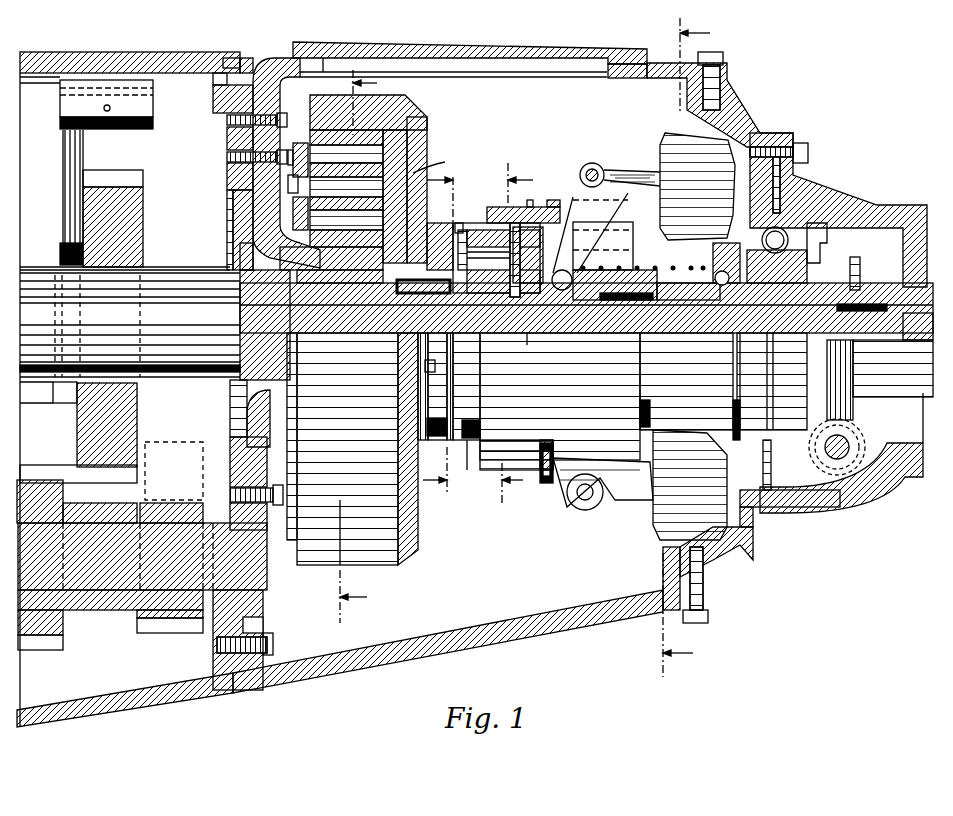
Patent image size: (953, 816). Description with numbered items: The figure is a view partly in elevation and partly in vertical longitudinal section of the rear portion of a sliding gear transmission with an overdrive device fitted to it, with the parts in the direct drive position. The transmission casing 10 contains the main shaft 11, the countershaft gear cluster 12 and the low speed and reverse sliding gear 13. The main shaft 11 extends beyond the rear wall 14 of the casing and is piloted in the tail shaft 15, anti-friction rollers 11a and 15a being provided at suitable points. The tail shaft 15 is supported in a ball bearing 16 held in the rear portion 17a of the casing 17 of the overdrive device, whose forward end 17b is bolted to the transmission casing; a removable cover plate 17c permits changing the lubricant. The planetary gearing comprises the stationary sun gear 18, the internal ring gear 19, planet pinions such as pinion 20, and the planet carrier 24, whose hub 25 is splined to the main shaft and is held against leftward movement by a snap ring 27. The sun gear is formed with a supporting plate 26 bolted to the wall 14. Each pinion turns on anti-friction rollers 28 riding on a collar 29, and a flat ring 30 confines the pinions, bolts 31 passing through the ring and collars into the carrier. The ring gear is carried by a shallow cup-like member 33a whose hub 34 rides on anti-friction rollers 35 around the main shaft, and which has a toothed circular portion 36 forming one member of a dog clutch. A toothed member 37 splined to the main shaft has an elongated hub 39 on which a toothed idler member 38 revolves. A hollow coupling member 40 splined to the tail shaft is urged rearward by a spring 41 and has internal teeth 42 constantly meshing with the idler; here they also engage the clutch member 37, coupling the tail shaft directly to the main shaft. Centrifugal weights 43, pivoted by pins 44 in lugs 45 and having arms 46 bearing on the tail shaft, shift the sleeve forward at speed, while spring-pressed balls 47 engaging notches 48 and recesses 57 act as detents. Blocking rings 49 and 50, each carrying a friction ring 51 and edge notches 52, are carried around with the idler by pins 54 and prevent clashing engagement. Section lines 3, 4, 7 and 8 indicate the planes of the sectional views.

The casing 10 is at (95, 712).
The main shaft 11 is at (153, 293).
The anti-friction rollers 11a is at (625, 303).
The countershaft gear cluster 12 is at (111, 607).
The low speed and reverse sliding gear 13 is at (133, 412).
The rear wall 14 is at (227, 142).
The tail shaft 15 is at (887, 380).
The anti-friction rollers 15a is at (875, 303).
The ball bearing 16 is at (807, 253).
The casing of the overdrive device 17 is at (547, 620).
The rear portion 17a is at (813, 193).
The forward end 17b is at (273, 60).
The removable cover plate 17c is at (547, 64).
The sun gear 18 is at (360, 290).
The internal ring gear 19 is at (387, 112).
The planet pinion 20 is at (387, 133).
The planet carrier 24 is at (395, 290).
The hub 25 is at (330, 288).
The supporting plate 26 is at (257, 445).
The snap ring 27 is at (253, 260).
The anti-friction rollers 28 is at (417, 227).
The collar 29 is at (421, 190).
The flat ring 30 is at (297, 143).
The bolts 31 is at (294, 190).
The member 33a is at (400, 563).
The hub 34 is at (423, 380).
The anti-friction rollers 35 is at (560, 401).
The circular portion 36 is at (423, 425).
The toothed member 37 is at (528, 223).
The toothed idler member 38 is at (467, 443).
The elongated hub 39 is at (527, 340).
The coupling member 40 is at (538, 470).
The spring 41 is at (627, 267).
The teeth 42 is at (498, 223).
The centrifugal weights 43 is at (673, 157).
The pins 44 is at (592, 169).
The lugs 45 is at (573, 193).
The arm 46 is at (600, 235).
The spring-pressed balls 47 is at (727, 260).
The notches 48 is at (723, 290).
The flat disc or ring 49 is at (447, 272).
The ring 50 is at (540, 240).
The friction ring 51 is at (460, 223).
The notches 52 is at (423, 367).
The pins 54 is at (487, 223).
The recesses 57 is at (665, 283).
The section line 3 is at (356, 350).
The section line 4 is at (684, 349).
The section line 7 is at (514, 335).
The section line 8 is at (441, 331).